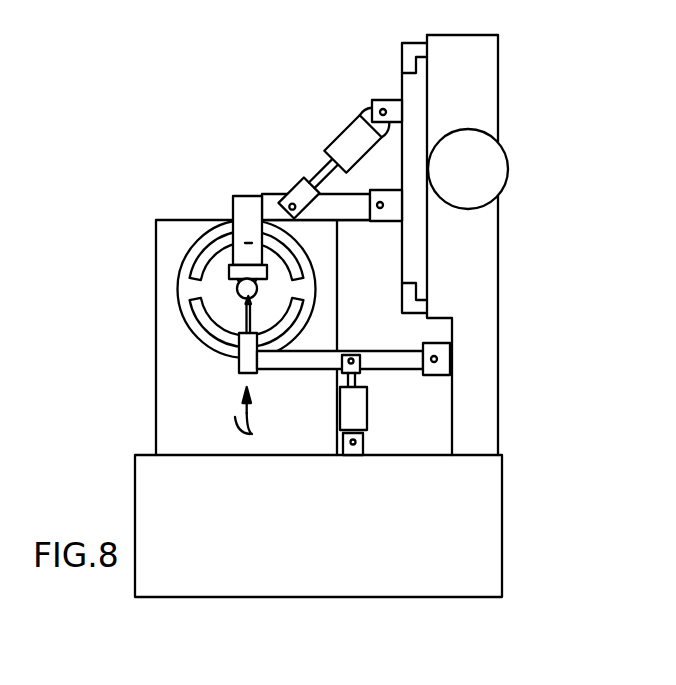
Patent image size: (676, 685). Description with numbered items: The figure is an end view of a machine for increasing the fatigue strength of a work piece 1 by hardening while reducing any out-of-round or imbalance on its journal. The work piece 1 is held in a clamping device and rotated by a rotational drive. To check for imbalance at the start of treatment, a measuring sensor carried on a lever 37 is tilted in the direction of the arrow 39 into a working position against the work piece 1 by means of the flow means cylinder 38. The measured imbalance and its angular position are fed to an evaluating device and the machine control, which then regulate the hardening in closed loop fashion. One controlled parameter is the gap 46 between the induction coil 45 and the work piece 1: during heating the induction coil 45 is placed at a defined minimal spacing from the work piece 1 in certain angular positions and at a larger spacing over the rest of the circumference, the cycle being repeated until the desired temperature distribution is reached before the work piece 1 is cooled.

The work piece 1 is at (242, 292).
The lever 37 is at (308, 362).
The flow means cylinder 38 is at (358, 416).
The arrow 39 is at (223, 410).
The induction coil 45 is at (232, 270).
The gap 46 is at (242, 287).